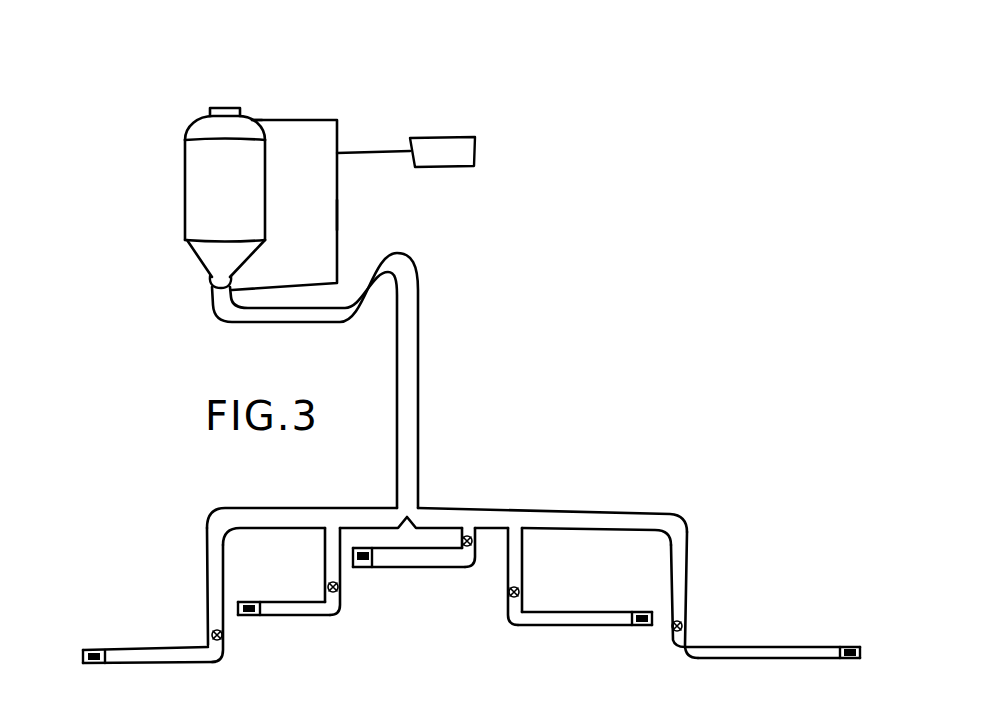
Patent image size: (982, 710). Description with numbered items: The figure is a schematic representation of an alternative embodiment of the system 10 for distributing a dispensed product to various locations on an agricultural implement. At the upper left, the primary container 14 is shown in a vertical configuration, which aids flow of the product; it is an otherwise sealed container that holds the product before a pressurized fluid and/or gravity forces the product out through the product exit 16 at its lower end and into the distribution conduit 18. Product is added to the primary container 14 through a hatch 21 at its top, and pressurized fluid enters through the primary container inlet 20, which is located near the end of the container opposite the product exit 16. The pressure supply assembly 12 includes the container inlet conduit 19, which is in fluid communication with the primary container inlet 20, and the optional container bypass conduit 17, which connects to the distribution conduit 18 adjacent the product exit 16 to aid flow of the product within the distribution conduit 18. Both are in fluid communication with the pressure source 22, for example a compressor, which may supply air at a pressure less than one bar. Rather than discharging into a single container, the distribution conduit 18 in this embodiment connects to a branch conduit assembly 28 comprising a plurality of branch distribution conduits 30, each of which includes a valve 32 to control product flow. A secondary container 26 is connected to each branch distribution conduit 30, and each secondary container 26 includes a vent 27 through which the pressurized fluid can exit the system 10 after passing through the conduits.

The system 10 is at (553, 213).
The pressure supply assembly 12 is at (388, 194).
The primary container 14 is at (178, 205).
The product exit 16 is at (209, 277).
The container bypass conduit 17 is at (338, 214).
The distribution conduit 18 is at (434, 298).
The container inlet conduit 19 is at (311, 118).
The primary container inlet 20 is at (253, 119).
The hatch 21 is at (213, 106).
The pressure source 22 is at (452, 137).
The secondary container 26 is at (143, 647).
The vent 27 is at (95, 649).
The branch conduit assembly 28 is at (538, 490).
The branch distribution conduit 30 is at (207, 551).
The valve 32 is at (225, 636).